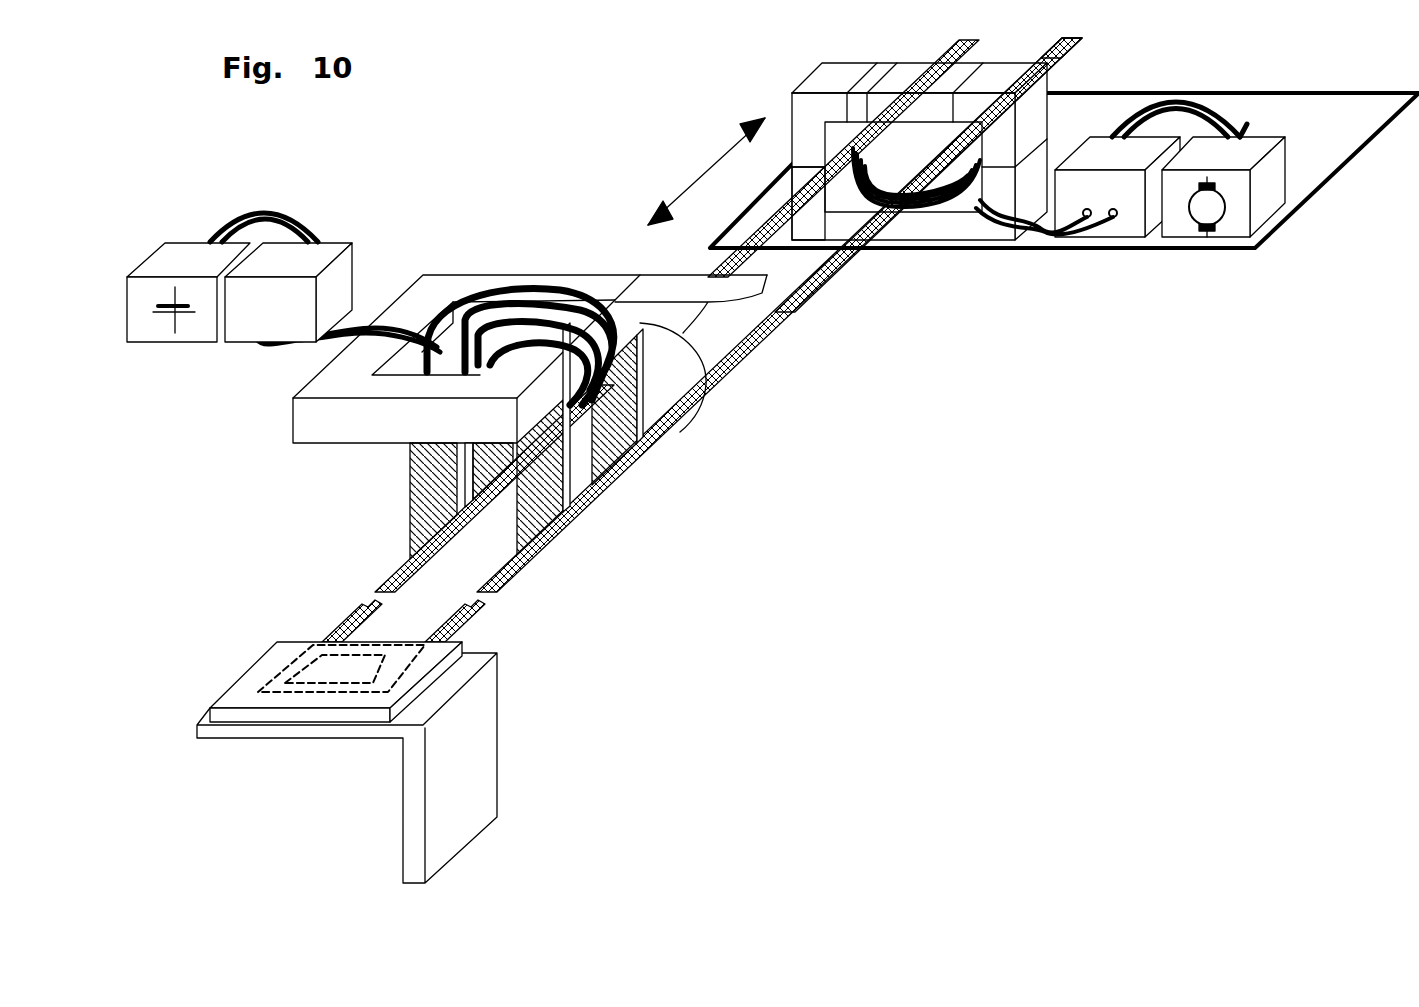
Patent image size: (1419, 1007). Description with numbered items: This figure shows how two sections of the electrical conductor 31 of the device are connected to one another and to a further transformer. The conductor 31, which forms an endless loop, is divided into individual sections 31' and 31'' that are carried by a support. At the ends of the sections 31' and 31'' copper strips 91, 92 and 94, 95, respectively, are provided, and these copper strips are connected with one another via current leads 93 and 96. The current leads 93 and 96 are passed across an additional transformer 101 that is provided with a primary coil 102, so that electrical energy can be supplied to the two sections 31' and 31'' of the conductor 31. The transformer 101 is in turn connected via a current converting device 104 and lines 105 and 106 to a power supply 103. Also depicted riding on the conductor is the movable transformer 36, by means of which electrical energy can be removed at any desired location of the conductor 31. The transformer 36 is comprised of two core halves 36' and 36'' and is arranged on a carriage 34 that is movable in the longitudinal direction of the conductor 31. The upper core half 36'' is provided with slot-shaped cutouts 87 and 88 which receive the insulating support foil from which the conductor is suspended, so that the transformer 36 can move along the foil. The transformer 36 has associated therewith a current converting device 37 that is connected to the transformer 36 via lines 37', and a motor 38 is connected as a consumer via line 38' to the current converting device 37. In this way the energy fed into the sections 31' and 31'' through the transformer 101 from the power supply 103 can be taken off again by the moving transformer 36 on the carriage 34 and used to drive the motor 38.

The conductor 31 is at (753, 354).
The conductor section 31' is at (650, 368).
The conductor section 31'' is at (928, 217).
The carriage 34 is at (1278, 238).
The transformer 36 is at (839, 151).
The core half 36' is at (694, 203).
The upper core half 36'' is at (812, 80).
The current converting device 37 is at (1176, 80).
The lines 37' is at (1104, 247).
The motor 38 is at (1278, 187).
The line 38' is at (1303, 125).
The slot-shaped cutout 87 is at (1075, 33).
The slot-shaped cutout 88 is at (866, 66).
The copper strip 91 is at (507, 753).
The copper strip 92 is at (410, 540).
The current lead 93 is at (603, 418).
The copper strip 94 is at (613, 472).
The copper strip 95 is at (473, 465).
The current lead 96 is at (553, 280).
The additional transformer 101 is at (292, 410).
The primary coil 102 is at (660, 330).
The power supply 103 is at (190, 237).
The current converting device 104 is at (333, 240).
The line 105 is at (285, 201).
The line 106 is at (373, 313).